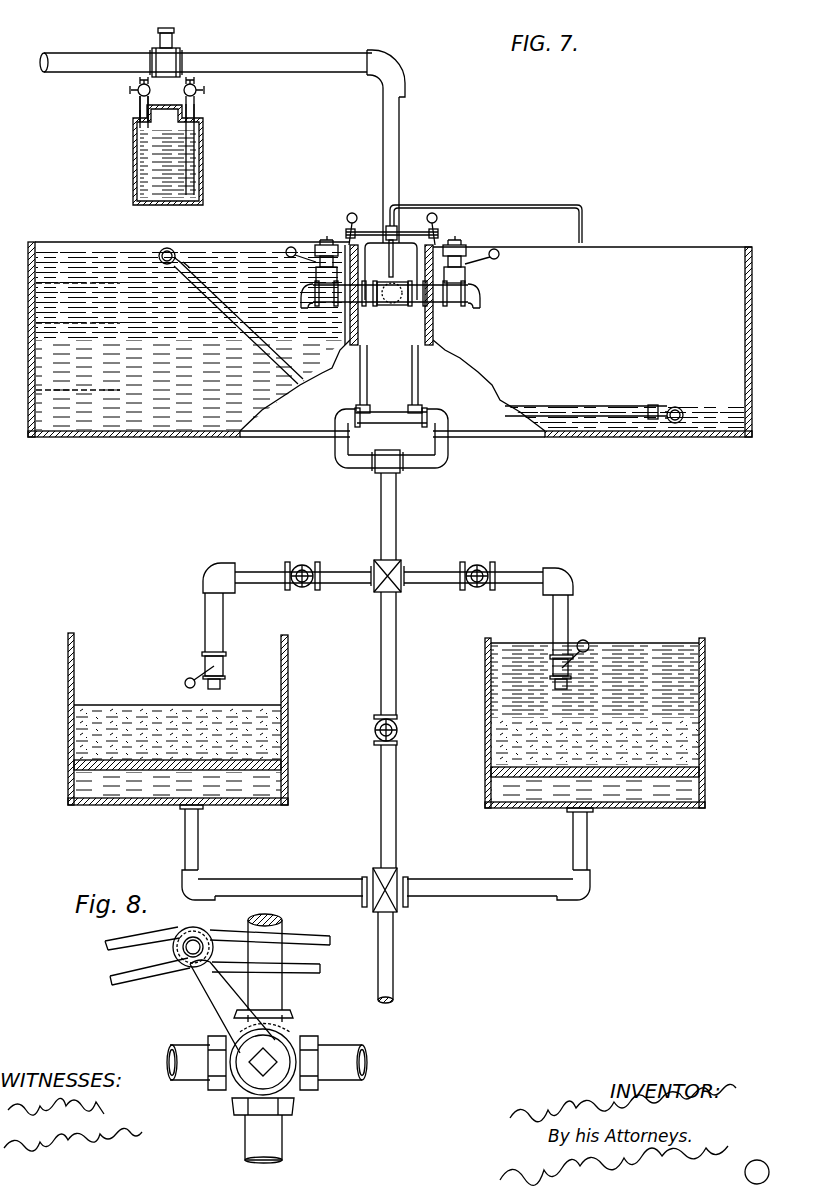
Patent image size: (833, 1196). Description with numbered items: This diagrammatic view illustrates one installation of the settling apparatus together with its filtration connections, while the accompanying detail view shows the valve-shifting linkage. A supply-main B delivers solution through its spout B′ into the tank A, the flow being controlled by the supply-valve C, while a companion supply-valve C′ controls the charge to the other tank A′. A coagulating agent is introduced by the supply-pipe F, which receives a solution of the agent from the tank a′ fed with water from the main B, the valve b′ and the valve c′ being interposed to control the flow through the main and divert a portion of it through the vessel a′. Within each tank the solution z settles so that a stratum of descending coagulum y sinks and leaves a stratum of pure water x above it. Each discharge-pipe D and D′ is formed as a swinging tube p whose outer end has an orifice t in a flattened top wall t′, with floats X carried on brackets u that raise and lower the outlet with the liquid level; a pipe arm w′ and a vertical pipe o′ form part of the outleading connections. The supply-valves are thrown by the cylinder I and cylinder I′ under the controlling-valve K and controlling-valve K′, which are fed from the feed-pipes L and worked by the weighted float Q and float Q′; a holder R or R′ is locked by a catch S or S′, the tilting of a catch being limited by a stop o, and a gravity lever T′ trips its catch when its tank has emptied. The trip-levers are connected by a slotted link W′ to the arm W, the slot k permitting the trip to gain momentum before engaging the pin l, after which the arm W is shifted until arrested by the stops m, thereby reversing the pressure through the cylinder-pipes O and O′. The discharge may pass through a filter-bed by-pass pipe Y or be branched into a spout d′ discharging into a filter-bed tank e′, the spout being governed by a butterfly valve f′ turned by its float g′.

In FIG. 7, the supply-main B is at (386, 153).
In FIG. 7, the valve b′ is at (131, 95).
In FIG. 7, the valve c′ is at (203, 92).
In FIG. 7, the supply-pipe F is at (196, 112).
In FIG. 7, the tank a′ is at (203, 156).
In FIG. 7, the tank A′ is at (189, 327).
In FIG. 7, the tank A is at (592, 327).
In FIG. 7, the swinging tube p is at (272, 340).
In FIG. 7, the stratum of pure water x is at (34, 284).
In FIG. 7, the stratum of descending coagulum y is at (34, 324).
In FIG. 7, the solution z is at (34, 390).
In FIG. 7, the floats X is at (678, 400).
In FIG. 7, the brackets u is at (421, 339).
In FIG. 7, the orifice t is at (186, 262).
In FIG. 7, the top wall t′ is at (190, 268).
In FIG. 7, the pipe arm w′ is at (186, 278).
In FIG. 7, the discharge-pipe D′ is at (245, 312).
In FIG. 7, the discharge-pipe D is at (596, 410).
In FIG. 7, the feed-pipes L is at (390, 292).
In FIG. 8, the feed-pipes L is at (246, 1140).
In FIG. 7, the vertical pipe o′ is at (358, 379).
In FIG. 7, the stop o is at (410, 379).
In FIG. 7, the gravity lever T′ is at (393, 226).
In FIG. 7, the catch S′ is at (316, 254).
In FIG. 7, the cylinder I′ is at (322, 235).
In FIG. 7, the holder R′ is at (312, 238).
In FIG. 7, the float Q′ is at (294, 243).
In FIG. 7, the controlling-valve K′ is at (312, 266).
In FIG. 7, the supply-valve C′ is at (299, 296).
In FIG. 7, the catch S is at (461, 255).
In FIG. 7, the cylinder I is at (462, 256).
In FIG. 7, the holder R is at (484, 254).
In FIG. 7, the float Q is at (489, 262).
In FIG. 7, the controlling-valve K is at (478, 284).
In FIG. 7, the supply-valve C is at (479, 293).
In FIG. 7, the spout B′ is at (474, 310).
In FIG. 7, the filter-bed by-pass pipe Y is at (396, 681).
In FIG. 7, the butterfly valve f′ is at (548, 665).
In FIG. 7, the spout d′ is at (561, 688).
In FIG. 7, the float g′ is at (585, 640).
In FIG. 7, the filter-bed tank e′ is at (485, 722).
In FIG. 8, the slotted link W′ is at (147, 953).
In FIG. 8, the slot k is at (182, 936).
In FIG. 8, the pin l is at (193, 937).
In FIG. 8, the arm W is at (232, 1006).
In FIG. 8, the cylinder-pipe O is at (168, 1062).
In FIG. 8, the cylinder-pipe O′ is at (368, 1062).
In FIG. 8, the stops m is at (212, 1080).